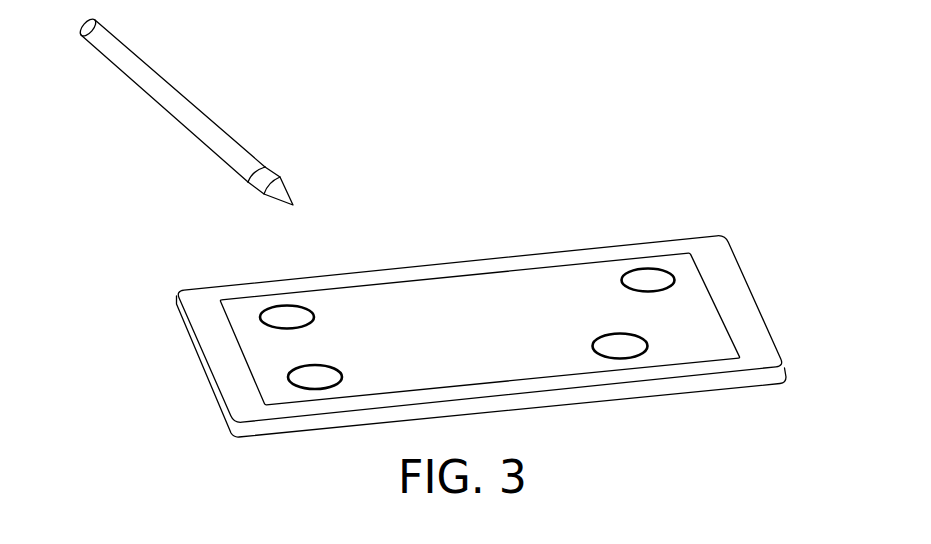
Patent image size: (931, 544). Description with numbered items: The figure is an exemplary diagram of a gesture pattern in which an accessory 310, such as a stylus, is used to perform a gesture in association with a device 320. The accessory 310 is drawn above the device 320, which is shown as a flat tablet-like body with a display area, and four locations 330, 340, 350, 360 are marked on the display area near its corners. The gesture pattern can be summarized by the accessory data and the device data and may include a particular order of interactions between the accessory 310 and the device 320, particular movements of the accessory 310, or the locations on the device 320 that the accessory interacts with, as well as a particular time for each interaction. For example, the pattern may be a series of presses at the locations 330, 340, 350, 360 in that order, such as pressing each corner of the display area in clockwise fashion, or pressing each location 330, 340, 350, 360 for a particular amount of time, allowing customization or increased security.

The accessory 310 is at (193, 128).
The device 320 is at (192, 289).
The location 330 is at (315, 317).
The location 340 is at (593, 347).
The location 350 is at (343, 377).
The location 360 is at (622, 280).